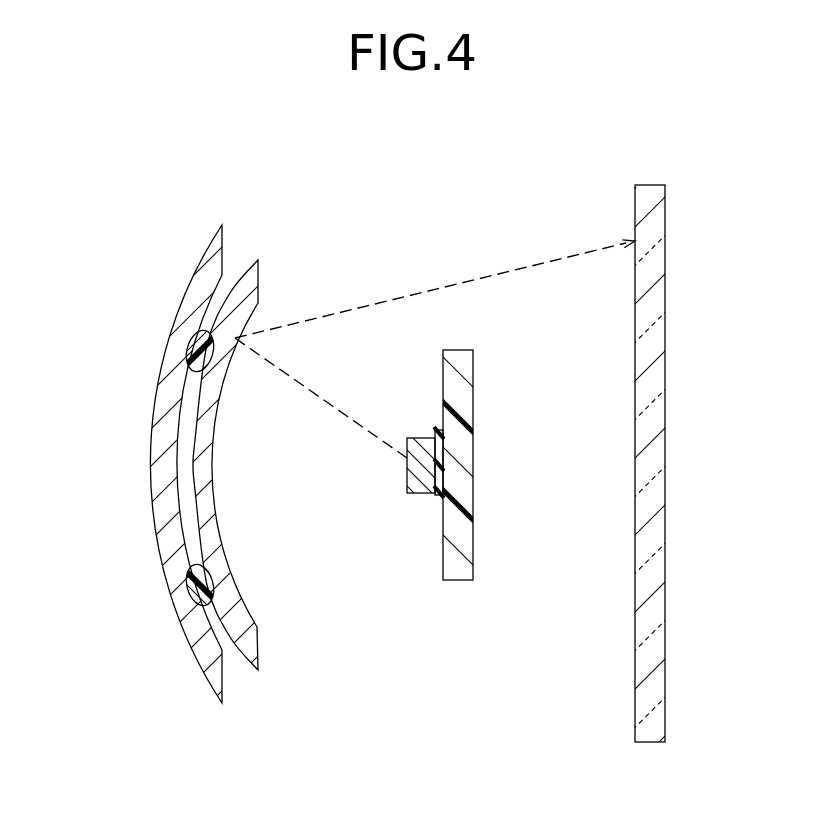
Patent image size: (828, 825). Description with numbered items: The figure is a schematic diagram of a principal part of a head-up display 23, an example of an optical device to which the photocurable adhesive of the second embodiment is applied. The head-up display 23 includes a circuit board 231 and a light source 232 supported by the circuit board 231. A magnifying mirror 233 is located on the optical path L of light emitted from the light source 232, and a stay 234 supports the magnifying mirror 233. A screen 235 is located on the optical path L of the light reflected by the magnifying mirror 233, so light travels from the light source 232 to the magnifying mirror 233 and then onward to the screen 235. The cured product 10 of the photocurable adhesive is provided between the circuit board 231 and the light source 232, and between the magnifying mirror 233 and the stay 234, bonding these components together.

The cured product 10 is at (203, 565).
The head-up display 23 is at (387, 233).
The circuit board 231 is at (457, 535).
The light source 232 is at (407, 490).
The magnifying mirror 233 is at (240, 632).
The stay 234 is at (180, 568).
The screen 235 is at (650, 497).
The optical path L is at (548, 262).